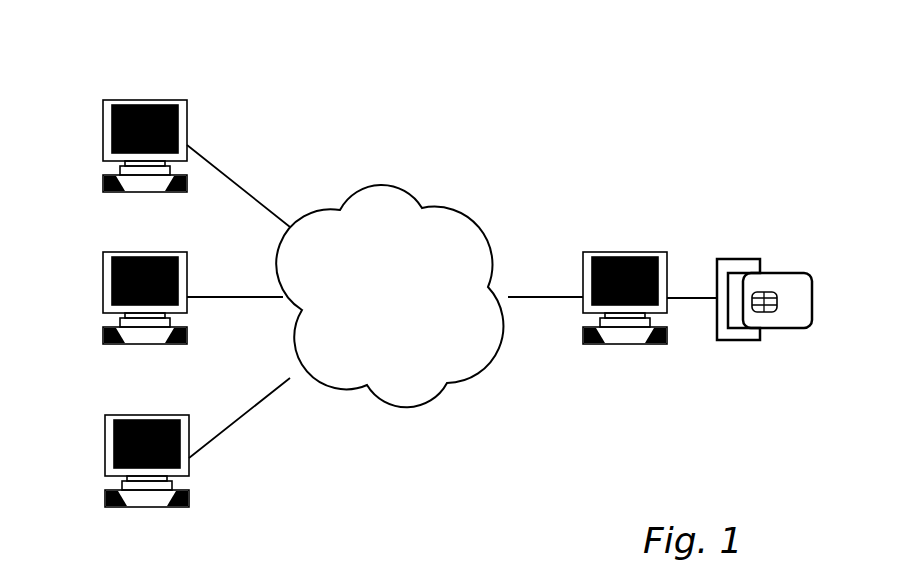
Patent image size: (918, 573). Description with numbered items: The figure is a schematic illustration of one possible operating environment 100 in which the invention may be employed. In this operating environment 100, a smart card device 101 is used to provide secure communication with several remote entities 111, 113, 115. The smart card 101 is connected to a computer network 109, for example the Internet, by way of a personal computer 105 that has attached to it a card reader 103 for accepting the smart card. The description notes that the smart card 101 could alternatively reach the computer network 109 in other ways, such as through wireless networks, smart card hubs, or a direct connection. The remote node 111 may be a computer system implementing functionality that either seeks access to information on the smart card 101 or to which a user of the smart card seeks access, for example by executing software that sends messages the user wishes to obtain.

The operating environment 100 is at (286, 44).
The smart card device 101 is at (800, 328).
The card reader 103 is at (742, 343).
The personal computer 105 is at (630, 340).
The computer network 109 is at (408, 407).
The remote node 111 is at (103, 155).
The remote entity 113 is at (106, 283).
The remote entity 115 is at (108, 452).